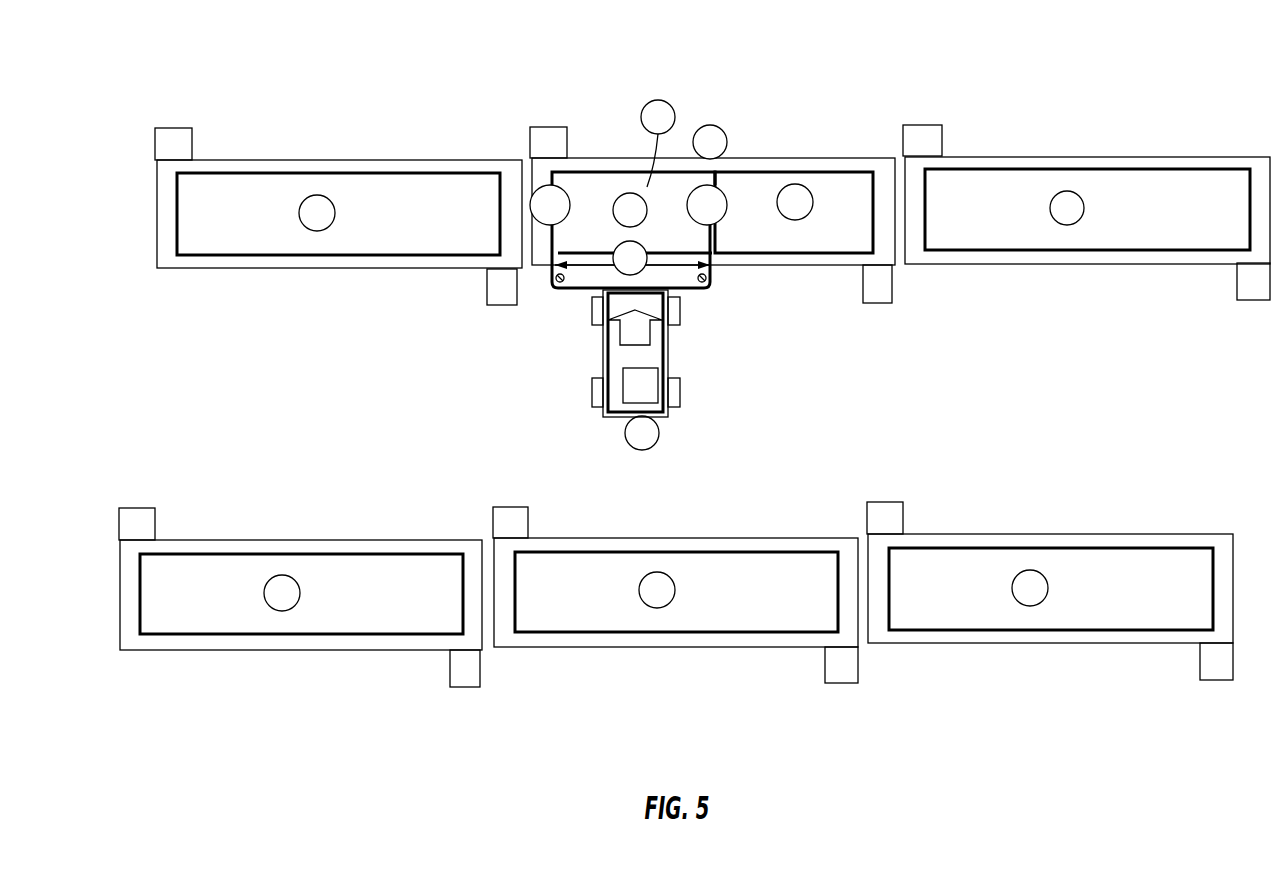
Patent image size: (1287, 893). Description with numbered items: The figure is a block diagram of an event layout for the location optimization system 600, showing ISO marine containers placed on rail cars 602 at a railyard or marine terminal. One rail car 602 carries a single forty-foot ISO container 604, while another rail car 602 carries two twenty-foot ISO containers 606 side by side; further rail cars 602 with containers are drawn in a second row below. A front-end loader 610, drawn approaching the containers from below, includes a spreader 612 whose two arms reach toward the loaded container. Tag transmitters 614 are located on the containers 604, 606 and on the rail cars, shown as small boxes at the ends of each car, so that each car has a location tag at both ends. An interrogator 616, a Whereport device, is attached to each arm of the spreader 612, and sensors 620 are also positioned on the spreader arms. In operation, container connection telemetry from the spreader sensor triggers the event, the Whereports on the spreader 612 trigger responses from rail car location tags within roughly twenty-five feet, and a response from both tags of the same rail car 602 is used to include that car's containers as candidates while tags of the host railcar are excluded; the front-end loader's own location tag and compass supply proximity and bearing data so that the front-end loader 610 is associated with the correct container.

The system 600 is at (890, 95).
The rail car 602 is at (397, 267).
The 40-foot ISO container 604 is at (357, 227).
The 20-foot ISO container 606 is at (837, 188).
The front-end loader 610 is at (670, 352).
The spreader 612 is at (547, 280).
The tag transmitter 614 is at (192, 143).
The interrogator 616 is at (722, 190).
The sensor 620 is at (558, 287).